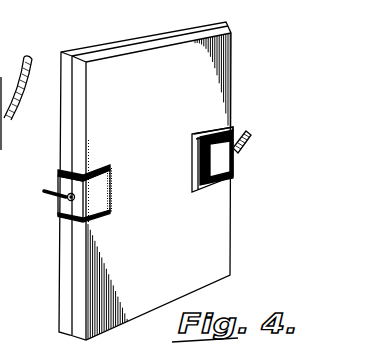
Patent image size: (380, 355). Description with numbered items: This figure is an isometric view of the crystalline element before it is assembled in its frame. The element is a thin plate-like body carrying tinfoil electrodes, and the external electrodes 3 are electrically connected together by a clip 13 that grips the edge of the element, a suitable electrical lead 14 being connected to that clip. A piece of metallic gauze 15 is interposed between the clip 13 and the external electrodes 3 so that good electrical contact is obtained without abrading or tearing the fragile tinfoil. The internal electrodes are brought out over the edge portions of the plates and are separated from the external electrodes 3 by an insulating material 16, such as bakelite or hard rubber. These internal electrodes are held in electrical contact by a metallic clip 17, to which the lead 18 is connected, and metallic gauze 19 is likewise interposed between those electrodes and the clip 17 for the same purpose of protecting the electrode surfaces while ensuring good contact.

The external electrode 3 is at (17, 62).
The clip 13 is at (102, 212).
The electrical lead 14 is at (45, 194).
The metallic gauze 15 is at (110, 168).
The insulating material 16 is at (198, 193).
The metallic clip 17 is at (222, 161).
The lead 18 is at (249, 132).
The metallic gauze 19 is at (200, 137).